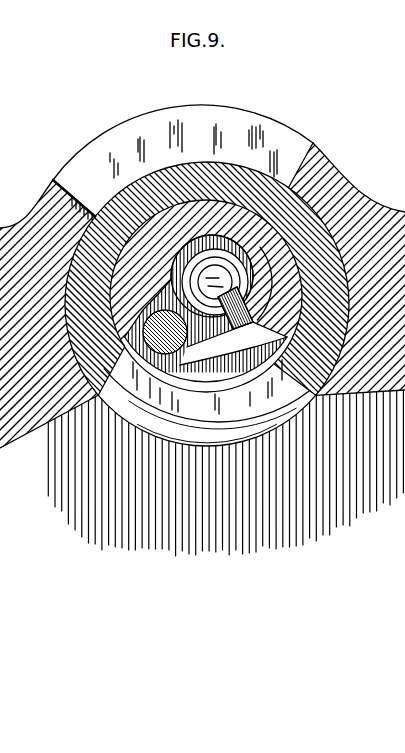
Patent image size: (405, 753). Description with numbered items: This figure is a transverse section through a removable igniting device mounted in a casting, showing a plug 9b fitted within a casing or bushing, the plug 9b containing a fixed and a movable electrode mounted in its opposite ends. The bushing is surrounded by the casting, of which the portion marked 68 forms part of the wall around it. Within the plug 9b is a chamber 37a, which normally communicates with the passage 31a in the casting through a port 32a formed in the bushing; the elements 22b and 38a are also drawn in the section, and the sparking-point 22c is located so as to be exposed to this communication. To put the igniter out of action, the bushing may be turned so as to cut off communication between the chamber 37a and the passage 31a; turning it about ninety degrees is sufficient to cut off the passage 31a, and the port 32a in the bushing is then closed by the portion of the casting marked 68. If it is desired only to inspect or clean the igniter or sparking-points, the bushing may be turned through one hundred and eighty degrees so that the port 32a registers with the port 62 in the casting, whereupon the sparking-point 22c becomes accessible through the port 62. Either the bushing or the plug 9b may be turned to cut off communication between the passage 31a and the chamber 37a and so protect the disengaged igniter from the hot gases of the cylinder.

The port 62 is at (183, 162).
The portion of the casting 68 is at (202, 280).
The plug 9b is at (127, 251).
The eccentric hub 22b is at (252, 265).
The sparking-point 22c is at (268, 301).
The bar 38a is at (233, 343).
The chamber 37a is at (204, 306).
The port 32a is at (207, 401).
The passage 31a is at (225, 470).